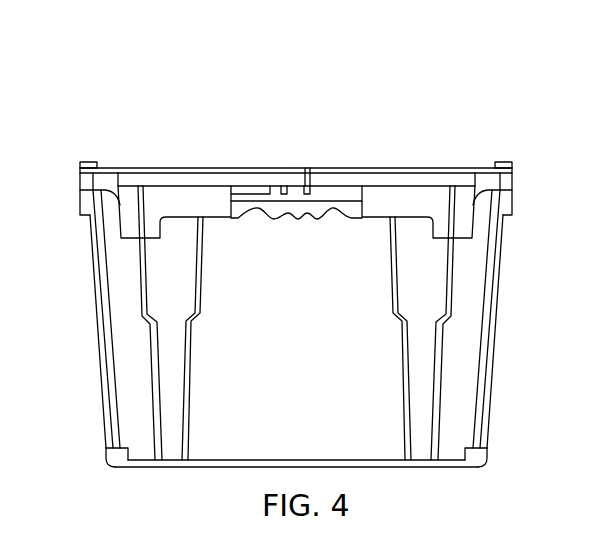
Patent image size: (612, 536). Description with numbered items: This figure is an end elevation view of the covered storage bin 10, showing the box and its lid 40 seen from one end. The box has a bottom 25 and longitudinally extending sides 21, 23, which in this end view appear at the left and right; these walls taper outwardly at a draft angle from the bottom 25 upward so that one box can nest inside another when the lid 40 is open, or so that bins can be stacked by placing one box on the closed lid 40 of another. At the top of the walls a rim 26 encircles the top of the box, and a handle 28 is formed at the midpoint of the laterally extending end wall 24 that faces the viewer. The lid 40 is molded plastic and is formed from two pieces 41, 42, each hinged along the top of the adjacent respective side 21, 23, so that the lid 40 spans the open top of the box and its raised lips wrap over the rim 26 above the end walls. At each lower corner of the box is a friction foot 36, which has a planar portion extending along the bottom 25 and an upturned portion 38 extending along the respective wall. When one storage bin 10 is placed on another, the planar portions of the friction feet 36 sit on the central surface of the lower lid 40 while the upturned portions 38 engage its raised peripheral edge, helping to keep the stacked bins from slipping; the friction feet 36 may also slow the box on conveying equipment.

The storage bin 10 is at (116, 120).
The lid 40 is at (460, 152).
The lid piece 41 is at (192, 168).
The lid piece 42 is at (405, 170).
The handle 28 is at (321, 208).
The rim 26 is at (512, 182).
The side 21 is at (90, 272).
The side 23 is at (500, 305).
The end wall 24 is at (385, 446).
The bottom 25 is at (225, 467).
The upturned portion 38 is at (106, 450).
The friction foot 36 is at (92, 474).